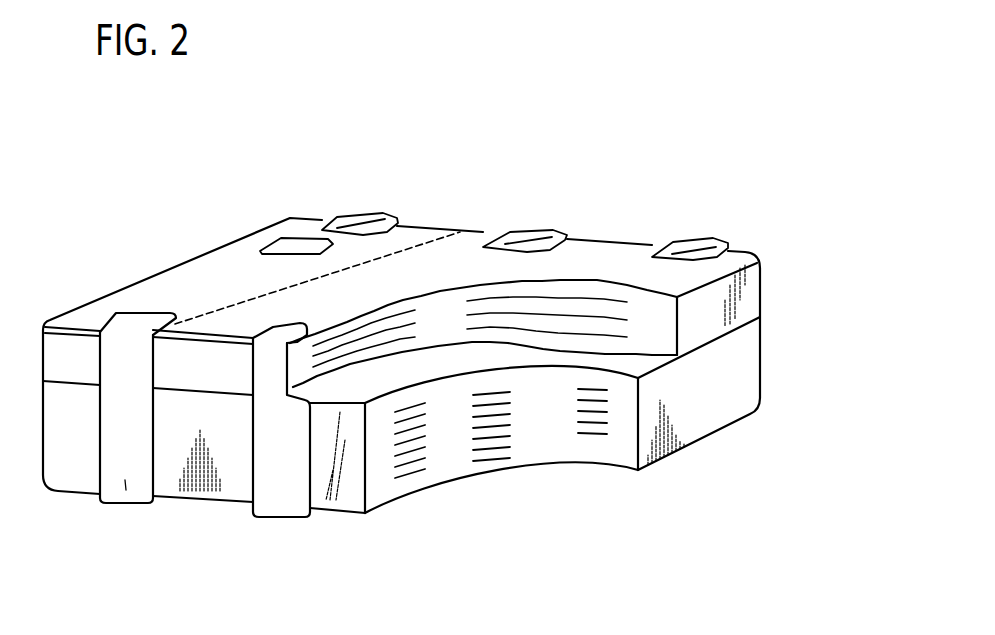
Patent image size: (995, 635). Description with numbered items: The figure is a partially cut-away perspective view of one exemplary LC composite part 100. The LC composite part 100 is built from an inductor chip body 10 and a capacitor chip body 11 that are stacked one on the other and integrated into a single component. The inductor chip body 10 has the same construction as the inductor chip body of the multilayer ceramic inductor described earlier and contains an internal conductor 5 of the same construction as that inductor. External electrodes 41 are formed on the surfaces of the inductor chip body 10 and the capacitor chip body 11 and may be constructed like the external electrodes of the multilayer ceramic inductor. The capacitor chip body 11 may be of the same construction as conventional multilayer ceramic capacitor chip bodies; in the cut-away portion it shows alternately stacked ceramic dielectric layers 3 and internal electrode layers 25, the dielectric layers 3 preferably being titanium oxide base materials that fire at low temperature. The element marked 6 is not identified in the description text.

The LC composite part 100 is at (458, 372).
The ceramic dielectric layer 3 is at (453, 303).
The internal electrode layer 25 is at (607, 278).
The capacitor chip body 11 is at (768, 266).
The external electrode 41 is at (122, 507).
The internal conductor 5 is at (415, 470).
The lower curved wall 6 is at (550, 447).
The inductor chip body 10 is at (612, 447).